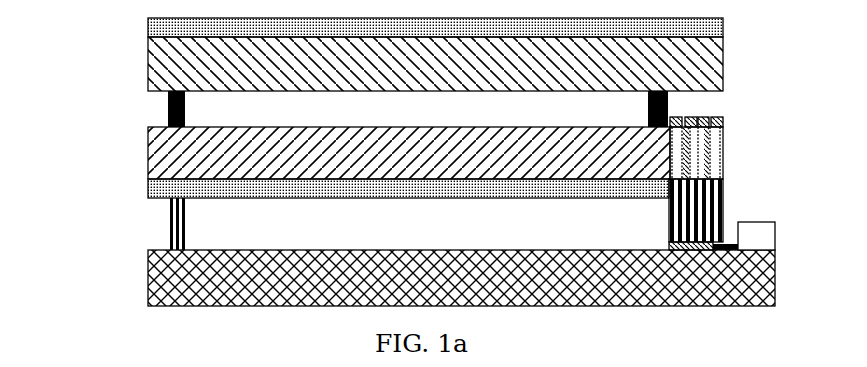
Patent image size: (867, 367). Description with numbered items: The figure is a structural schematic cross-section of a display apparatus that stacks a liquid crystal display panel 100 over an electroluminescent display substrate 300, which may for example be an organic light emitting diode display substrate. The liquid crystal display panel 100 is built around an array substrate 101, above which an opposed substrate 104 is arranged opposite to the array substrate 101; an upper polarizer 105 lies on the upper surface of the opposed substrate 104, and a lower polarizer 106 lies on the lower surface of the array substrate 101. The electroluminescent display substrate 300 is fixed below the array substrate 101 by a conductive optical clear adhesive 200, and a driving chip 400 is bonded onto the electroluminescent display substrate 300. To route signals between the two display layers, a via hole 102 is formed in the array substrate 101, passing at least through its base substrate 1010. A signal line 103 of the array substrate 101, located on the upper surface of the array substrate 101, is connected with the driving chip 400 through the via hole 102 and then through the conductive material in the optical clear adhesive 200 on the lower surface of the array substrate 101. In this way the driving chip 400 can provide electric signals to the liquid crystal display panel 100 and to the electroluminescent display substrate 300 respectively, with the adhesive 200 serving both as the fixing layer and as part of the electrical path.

The liquid crystal display panel 100 is at (43, 20).
The array substrate 101 is at (354, 153).
The base substrate 1010 is at (148, 155).
The via hole 102 is at (718, 143).
The signal line 103 is at (723, 120).
The opposed substrate 104 is at (148, 62).
The upper polarizer 105 is at (148, 27).
The lower polarizer 106 is at (148, 191).
The conductive optical clear adhesive 200 is at (723, 197).
The electroluminescent display substrate 300 is at (775, 287).
The driving chip 400 is at (775, 233).